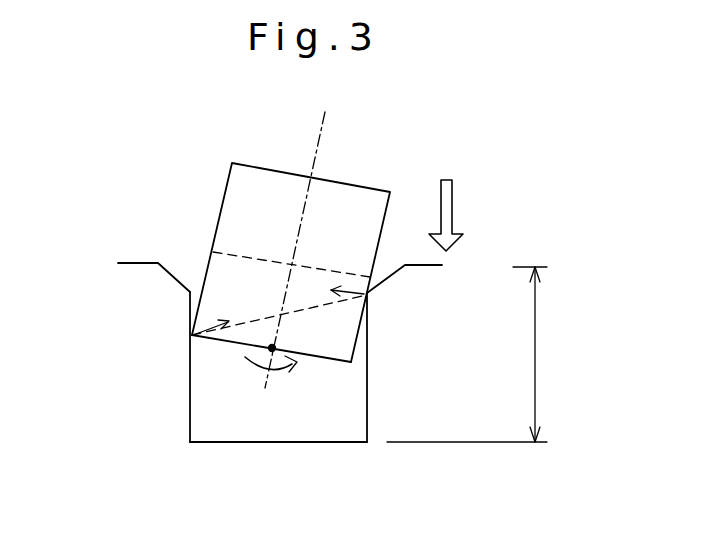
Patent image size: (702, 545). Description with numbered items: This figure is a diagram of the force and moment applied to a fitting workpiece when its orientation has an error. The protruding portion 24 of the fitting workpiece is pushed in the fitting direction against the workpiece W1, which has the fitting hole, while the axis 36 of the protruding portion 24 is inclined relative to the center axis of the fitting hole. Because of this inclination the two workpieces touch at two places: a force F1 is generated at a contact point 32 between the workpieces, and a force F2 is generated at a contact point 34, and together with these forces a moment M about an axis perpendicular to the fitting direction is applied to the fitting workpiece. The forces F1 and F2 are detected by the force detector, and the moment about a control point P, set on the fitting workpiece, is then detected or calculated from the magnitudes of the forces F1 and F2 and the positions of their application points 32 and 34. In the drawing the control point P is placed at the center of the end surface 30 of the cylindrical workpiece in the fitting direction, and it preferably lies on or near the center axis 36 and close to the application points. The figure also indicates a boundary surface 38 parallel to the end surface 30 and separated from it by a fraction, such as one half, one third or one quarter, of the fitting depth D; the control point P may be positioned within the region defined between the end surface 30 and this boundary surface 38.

The protruding portion 24 is at (260, 187).
The end surface 30 is at (223, 340).
The contact point 32 is at (192, 335).
The contact point 34 is at (367, 295).
The axis 36 is at (322, 133).
The boundary surface 38 is at (240, 257).
The workpiece W1 is at (143, 273).
The force F1 is at (190, 340).
The force F2 is at (382, 304).
The control point P is at (276, 346).
The moment M is at (300, 368).
The fitting depth D is at (467, 354).